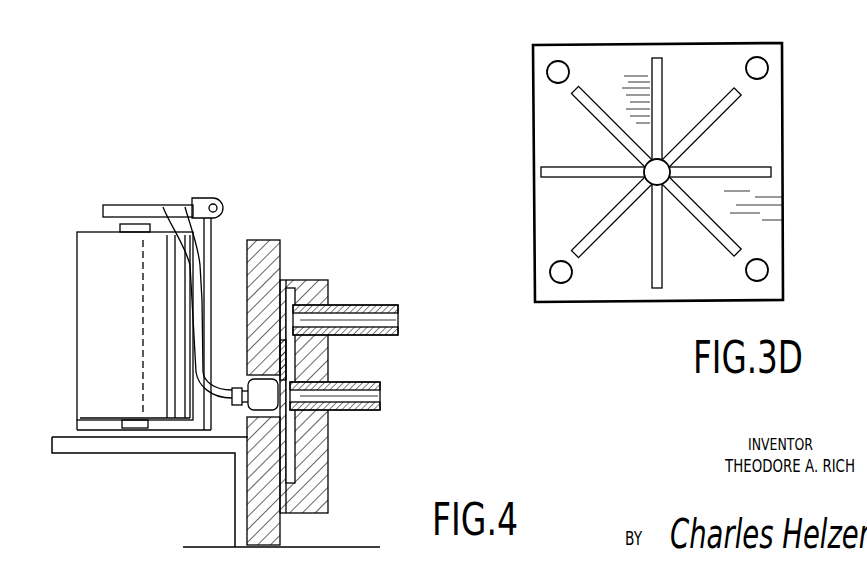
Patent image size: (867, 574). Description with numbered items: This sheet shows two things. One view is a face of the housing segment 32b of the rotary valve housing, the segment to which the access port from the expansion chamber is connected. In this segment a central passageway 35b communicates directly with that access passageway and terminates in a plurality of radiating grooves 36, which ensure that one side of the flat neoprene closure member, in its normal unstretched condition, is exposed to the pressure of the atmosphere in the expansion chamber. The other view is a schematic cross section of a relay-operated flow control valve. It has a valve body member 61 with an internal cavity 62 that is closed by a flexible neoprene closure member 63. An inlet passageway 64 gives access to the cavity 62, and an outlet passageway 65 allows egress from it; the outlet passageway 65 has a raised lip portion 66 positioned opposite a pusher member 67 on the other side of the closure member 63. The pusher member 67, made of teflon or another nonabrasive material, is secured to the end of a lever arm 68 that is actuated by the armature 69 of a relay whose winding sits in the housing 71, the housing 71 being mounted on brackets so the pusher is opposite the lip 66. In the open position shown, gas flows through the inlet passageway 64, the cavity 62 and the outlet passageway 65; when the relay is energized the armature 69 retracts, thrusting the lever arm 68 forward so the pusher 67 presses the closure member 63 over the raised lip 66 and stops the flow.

In FIG. 3D, the housing segment 32b is at (532, 142).
In FIG. 3D, the central passageway 35b is at (672, 158).
In FIG. 3D, the radiating grooves 36 is at (663, 112).
In FIG. 4, the valve body member 61 is at (312, 468).
In FIG. 4, the internal cavity 62 is at (290, 447).
In FIG. 4, the flexible neoprene closure member 63 is at (288, 315).
In FIG. 4, the inlet passageway 64 is at (353, 308).
In FIG. 4, the outlet passageway 65 is at (370, 380).
In FIG. 4, the raised lip portion 66 is at (290, 373).
In FIG. 4, the pusher member 67 is at (247, 385).
In FIG. 4, the lever arm 68 is at (180, 248).
In FIG. 4, the armature 69 is at (143, 205).
In FIG. 4, the relay housing 71 is at (92, 303).